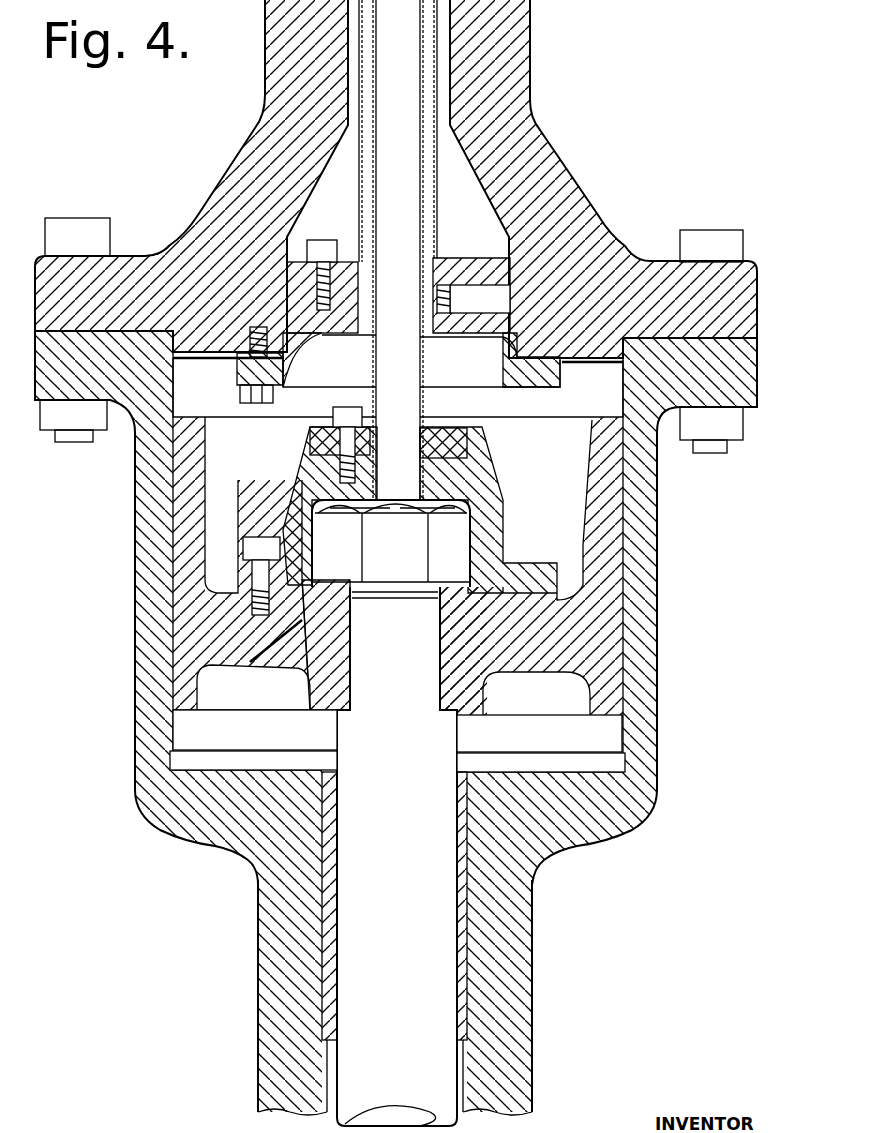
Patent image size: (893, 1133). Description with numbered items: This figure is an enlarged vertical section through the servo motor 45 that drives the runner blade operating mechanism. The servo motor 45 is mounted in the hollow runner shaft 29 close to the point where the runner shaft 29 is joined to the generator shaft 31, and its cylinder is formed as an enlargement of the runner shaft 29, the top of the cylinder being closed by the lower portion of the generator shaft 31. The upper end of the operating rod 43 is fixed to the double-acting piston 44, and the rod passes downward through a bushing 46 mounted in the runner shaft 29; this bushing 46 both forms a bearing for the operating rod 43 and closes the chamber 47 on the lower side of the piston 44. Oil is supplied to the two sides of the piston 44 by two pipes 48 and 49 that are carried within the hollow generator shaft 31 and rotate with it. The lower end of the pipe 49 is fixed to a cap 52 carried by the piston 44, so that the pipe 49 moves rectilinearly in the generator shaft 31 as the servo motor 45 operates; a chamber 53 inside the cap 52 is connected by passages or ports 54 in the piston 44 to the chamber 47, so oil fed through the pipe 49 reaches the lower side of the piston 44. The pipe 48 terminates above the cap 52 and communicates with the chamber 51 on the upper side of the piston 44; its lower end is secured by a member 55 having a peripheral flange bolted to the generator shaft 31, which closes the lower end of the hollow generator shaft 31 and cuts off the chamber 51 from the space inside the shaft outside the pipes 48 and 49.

The runner shaft 29 is at (520, 1000).
The generator shaft 31 is at (532, 103).
The operating rod 43 is at (397, 856).
The piston 44 is at (612, 535).
The servo motor 45 is at (140, 633).
The bushing 46 is at (320, 793).
The chamber 47 is at (541, 743).
The pipe 48 is at (362, 196).
The pipe 49 is at (418, 214).
The chamber 51 is at (398, 372).
The cap 52 is at (298, 452).
The chamber 53 is at (476, 537).
The passages or ports 54 is at (298, 668).
The member 55 is at (466, 333).